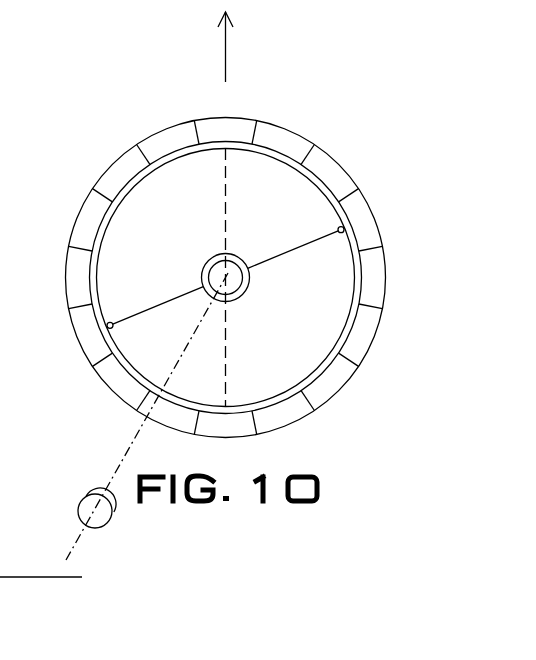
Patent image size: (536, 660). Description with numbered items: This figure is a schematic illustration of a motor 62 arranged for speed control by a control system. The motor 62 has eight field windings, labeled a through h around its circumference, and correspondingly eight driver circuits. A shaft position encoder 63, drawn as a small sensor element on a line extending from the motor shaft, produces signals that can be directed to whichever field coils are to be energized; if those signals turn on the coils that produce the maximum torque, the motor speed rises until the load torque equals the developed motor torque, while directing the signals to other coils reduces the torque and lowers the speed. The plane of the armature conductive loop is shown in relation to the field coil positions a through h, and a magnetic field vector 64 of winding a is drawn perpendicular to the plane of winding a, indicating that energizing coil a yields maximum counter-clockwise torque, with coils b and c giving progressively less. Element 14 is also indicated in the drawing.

The motor 62 is at (407, 238).
The rotatable disk with pointer 14 is at (148, 347).
The magnetic field vector 64 is at (226, 55).
The shaft position encoder 63 is at (82, 505).